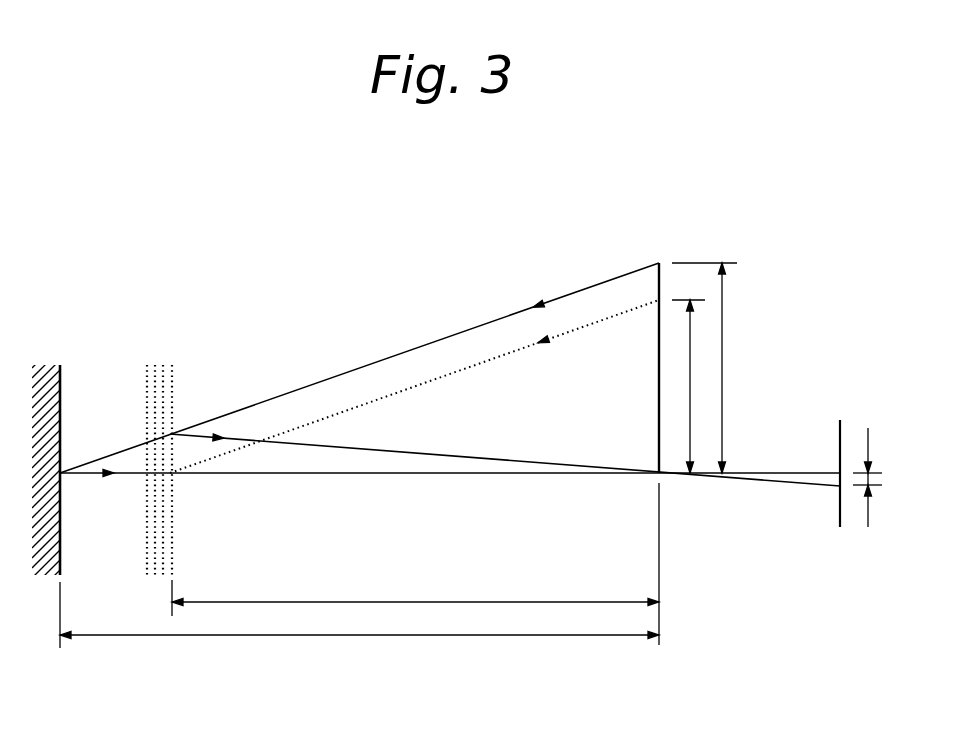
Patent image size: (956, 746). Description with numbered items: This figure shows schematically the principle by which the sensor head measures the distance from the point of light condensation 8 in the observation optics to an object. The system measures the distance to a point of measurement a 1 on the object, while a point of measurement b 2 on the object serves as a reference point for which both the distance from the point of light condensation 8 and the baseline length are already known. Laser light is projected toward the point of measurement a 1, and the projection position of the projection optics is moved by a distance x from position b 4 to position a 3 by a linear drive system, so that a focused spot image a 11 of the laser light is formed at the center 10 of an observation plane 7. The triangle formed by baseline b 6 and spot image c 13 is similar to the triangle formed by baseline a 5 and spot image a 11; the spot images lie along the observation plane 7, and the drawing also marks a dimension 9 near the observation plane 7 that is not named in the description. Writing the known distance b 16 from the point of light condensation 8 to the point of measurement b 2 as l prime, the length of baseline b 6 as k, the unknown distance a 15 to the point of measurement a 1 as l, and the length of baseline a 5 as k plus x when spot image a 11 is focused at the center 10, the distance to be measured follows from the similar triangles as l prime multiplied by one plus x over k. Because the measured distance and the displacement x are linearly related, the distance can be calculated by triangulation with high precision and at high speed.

The point of measurement a 1 is at (60, 366).
The point of measurement b 2 is at (173, 378).
The position a 3 is at (658, 263).
The position b 4 is at (656, 302).
The baseline a 5 is at (722, 305).
The baseline b 6 is at (692, 373).
The observation plane 7 is at (840, 422).
The point of light condensation 8 is at (657, 478).
The image displacement 9 is at (870, 484).
The center of the observation plane 10 is at (838, 474).
The spot image a 11 is at (60, 473).
The spot image c 13 is at (170, 473).
The distance a 15 is at (287, 635).
The distance b 16 is at (470, 602).